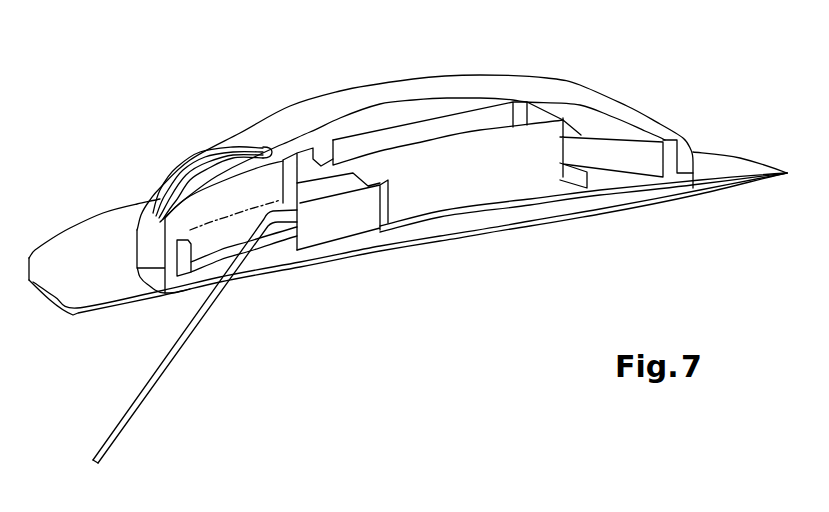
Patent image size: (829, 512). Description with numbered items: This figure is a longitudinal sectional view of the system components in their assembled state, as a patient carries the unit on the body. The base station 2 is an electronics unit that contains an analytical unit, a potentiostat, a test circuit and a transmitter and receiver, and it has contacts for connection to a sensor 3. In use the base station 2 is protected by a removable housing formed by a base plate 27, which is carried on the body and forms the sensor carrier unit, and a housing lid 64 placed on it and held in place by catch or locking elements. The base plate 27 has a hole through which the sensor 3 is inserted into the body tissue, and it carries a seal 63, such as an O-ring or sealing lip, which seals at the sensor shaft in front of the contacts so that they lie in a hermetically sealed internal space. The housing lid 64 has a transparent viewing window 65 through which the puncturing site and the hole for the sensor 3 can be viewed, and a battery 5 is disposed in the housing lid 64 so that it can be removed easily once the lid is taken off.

The base station 2 is at (412, 205).
The sensor 3 is at (183, 347).
The battery 5 is at (408, 137).
The base plate 27 is at (473, 222).
The seal 63 is at (667, 140).
The housing lid 64 is at (595, 98).
The transparent viewing window 65 is at (197, 187).